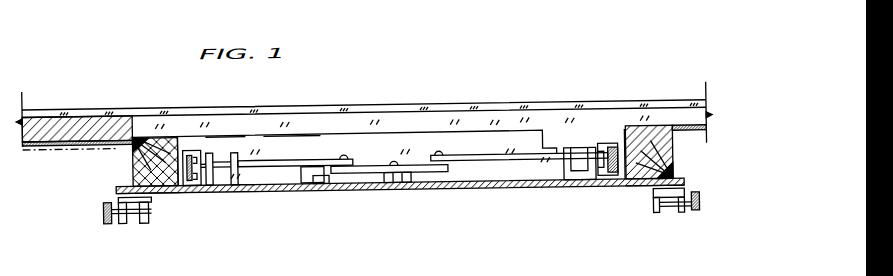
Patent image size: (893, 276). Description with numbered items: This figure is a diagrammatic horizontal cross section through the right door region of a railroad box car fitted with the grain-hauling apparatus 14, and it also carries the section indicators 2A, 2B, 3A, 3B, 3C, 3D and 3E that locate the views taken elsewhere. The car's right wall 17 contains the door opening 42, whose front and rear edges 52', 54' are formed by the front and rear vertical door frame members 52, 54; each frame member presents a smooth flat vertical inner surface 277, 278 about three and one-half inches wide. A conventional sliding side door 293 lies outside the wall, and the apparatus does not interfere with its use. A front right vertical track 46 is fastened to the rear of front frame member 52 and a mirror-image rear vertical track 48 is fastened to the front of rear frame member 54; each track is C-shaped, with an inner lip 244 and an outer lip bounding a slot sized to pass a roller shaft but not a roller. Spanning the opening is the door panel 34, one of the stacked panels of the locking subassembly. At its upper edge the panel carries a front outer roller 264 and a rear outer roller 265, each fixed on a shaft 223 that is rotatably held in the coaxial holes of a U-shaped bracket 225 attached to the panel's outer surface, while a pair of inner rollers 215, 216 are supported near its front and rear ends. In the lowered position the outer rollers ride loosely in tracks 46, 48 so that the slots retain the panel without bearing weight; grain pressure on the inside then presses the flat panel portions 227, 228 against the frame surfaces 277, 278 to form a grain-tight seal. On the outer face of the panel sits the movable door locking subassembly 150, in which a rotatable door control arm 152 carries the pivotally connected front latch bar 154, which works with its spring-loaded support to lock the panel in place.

The apparatus 14 is at (87, 208).
The right wall 17 is at (50, 147).
The panel 34 is at (375, 203).
The door opening 42 is at (490, 137).
The front right hand vertical track 46 is at (188, 153).
The rear right hand vertical track 48 is at (608, 186).
The front right door frame vertical member 52 is at (133, 162).
The front edge of door opening 52' is at (203, 112).
The right rear door frame vertical member 54 is at (648, 118).
The rear edge of door opening 54' is at (605, 115).
The door locking subassembly 150 is at (422, 158).
The door control arm 152 is at (359, 170).
The front latch bar 154 is at (279, 160).
The inner roller 215 is at (100, 223).
The inner roller 216 is at (699, 219).
The shaft 223 is at (578, 163).
The U-shaped bracket 225 is at (574, 186).
The flat panel portion 227 is at (167, 197).
The flat panel portion 228 is at (642, 196).
The inner lip 244 is at (203, 190).
The outer roller 264 is at (185, 197).
The outer roller 265 is at (614, 188).
The inner surface 277 is at (177, 139).
The inner surface 278 is at (673, 135).
The sliding side door 293 is at (93, 118).
The section line 2A is at (204, 86).
The section line 2B is at (207, 275).
The section line 3A is at (112, 109).
The section line 3B is at (555, 155).
The section line 3C is at (624, 180).
The section line 3D is at (672, 185).
The section line 3E is at (323, 103).